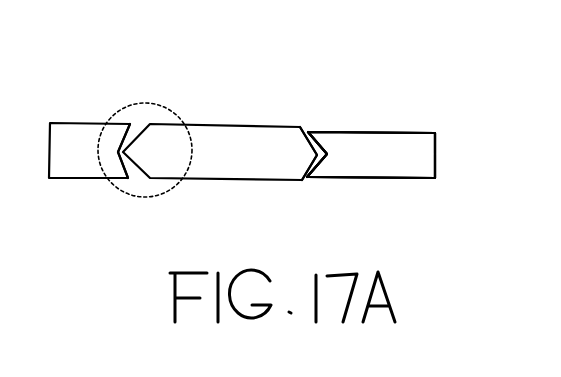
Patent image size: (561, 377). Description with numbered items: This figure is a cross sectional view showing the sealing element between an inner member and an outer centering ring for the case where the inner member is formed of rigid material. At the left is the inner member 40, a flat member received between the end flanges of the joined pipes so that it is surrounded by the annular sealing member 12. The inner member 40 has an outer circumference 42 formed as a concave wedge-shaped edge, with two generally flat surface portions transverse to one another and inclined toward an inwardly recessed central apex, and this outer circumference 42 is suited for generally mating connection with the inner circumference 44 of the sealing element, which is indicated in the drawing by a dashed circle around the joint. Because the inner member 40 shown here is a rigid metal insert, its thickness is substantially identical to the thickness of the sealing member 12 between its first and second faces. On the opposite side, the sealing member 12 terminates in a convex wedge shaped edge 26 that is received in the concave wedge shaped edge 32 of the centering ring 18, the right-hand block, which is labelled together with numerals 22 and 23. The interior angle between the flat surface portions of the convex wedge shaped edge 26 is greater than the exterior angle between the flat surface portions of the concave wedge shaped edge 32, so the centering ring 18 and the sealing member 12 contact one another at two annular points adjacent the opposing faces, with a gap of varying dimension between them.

The inner member 40 is at (73, 140).
The inner circumference of the sealing element 44 is at (140, 133).
The sealing member 12 is at (241, 143).
The centering ring 18 is at (392, 143).
The second connector member 22 is at (371, 155).
The second connector member 23 is at (371, 155).
The outer circumference of the inner member 42 is at (117, 165).
The convex wedge shaped edge 26 is at (305, 166).
The concave wedge shaped edge 32 is at (320, 157).